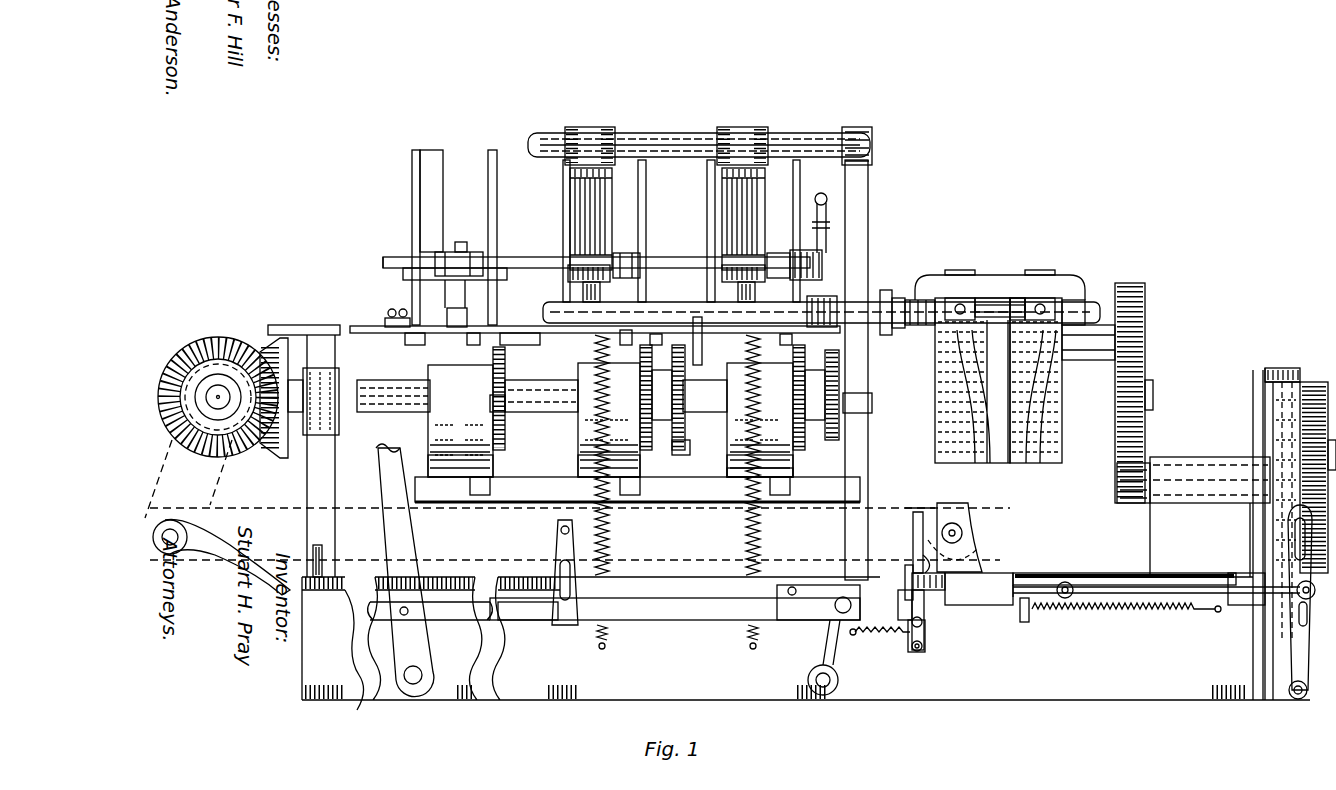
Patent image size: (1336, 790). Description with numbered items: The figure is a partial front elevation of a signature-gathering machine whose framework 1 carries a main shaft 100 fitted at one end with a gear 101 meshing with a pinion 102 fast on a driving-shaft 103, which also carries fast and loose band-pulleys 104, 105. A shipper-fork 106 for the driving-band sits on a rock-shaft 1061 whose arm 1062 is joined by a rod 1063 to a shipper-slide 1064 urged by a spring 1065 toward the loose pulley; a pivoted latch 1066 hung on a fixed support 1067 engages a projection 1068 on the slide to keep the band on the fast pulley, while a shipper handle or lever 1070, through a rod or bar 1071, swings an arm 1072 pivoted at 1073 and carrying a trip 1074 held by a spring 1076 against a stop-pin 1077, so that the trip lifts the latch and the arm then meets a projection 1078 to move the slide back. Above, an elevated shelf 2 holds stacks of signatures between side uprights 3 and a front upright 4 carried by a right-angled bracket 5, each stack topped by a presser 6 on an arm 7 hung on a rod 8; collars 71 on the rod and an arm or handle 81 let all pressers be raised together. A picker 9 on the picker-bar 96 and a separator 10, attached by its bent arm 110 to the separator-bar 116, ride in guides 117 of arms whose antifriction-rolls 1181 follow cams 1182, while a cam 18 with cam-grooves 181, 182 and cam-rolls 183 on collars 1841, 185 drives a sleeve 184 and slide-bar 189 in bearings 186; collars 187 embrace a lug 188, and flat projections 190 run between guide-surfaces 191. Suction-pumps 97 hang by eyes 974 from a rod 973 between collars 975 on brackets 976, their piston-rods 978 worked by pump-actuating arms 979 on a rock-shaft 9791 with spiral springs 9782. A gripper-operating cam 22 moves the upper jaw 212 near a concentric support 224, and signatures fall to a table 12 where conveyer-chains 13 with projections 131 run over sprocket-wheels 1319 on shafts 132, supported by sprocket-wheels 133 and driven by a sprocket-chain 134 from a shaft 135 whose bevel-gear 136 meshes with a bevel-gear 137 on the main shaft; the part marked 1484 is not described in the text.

The framework 1 is at (342, 471).
The elevated shelf 2 is at (291, 323).
The side uprights 3 is at (410, 168).
The front upright 4 is at (420, 148).
The right-angled bracket 5 is at (393, 257).
The presser 6 is at (390, 317).
The arm 7 is at (458, 252).
The rod 8 is at (455, 250).
The picker 9 is at (468, 340).
The separator 10 is at (515, 398).
The table-like support 12 is at (907, 505).
The conveyer-chains 13 is at (275, 508).
The cam 18 is at (1000, 300).
The gripper-operating cam 22 is at (491, 388).
The collar 71 is at (440, 250).
The arm or handle 81 is at (868, 172).
The picker-bar 96 is at (413, 340).
The suction-pumps 97 is at (563, 213).
The main shaft 100 is at (368, 380).
The gear 101 is at (1153, 298).
The pinion 102 is at (1132, 500).
The driving-shaft 103 is at (1155, 470).
The fast band-pulley 104 is at (1285, 366).
The loose band-pulley 105 is at (1312, 382).
The shipper-fork 106 is at (1268, 368).
The bent arm 110 is at (530, 334).
The separator-bar 116 is at (358, 324).
The guides 117 is at (698, 366).
The projections 131 is at (530, 482).
The shafts 132 is at (185, 543).
The sprocket-wheels 133 is at (558, 600).
The sprocket-chain 134 is at (212, 506).
The shaft 135 is at (213, 385).
The bevel-gear 136 is at (232, 335).
The bevel-gear 137 is at (265, 340).
The cam-groove 181 is at (968, 462).
The cam-groove 182 is at (1023, 463).
The cam-rolls 183 is at (985, 300).
The sleeve 184 is at (960, 298).
The collar 185 is at (1050, 298).
The bearings 186 is at (920, 298).
The collars 187 is at (884, 300).
The lug 188 is at (898, 298).
The slide-bar 189 is at (1072, 300).
The flat projections 190 is at (960, 275).
The guide-surfaces 191 is at (1035, 298).
The upper jaw 212 is at (480, 497).
The concentric support 224 is at (589, 443).
The rod 973 is at (532, 148).
The eyes or bearings 974 is at (590, 128).
The collars 975 is at (572, 127).
The brackets 976 is at (870, 160).
The piston-rods 978 is at (578, 268).
The pump-actuating arms 979 is at (818, 197).
The rock-shaft 1061 is at (1296, 700).
The arm 1062 is at (1287, 661).
The rod 1063 is at (1165, 600).
The shipper-slide 1064 is at (1025, 625).
The spring 1065 is at (1100, 615).
The pivoted latch 1066 is at (907, 600).
The fixed support 1067 is at (955, 585).
The projection 1068 is at (912, 625).
The shipper handle or lever 1070 is at (400, 448).
The rod or bar 1071 is at (512, 625).
The arm 1072 is at (822, 660).
The pivot 1073 is at (815, 690).
The trip 1074 is at (926, 612).
The spring 1076 is at (882, 640).
The stop-pin 1077 is at (920, 652).
The projection 1078 is at (800, 598).
The antifriction-rolls 1181 is at (680, 452).
The cams 1182 is at (735, 478).
The sprocket-wheels 1319 is at (175, 508).
The bracket 1484 is at (975, 505).
The collar 1841 is at (1008, 298).
The spiral springs 9782 is at (604, 620).
The rock-shaft 9791 is at (455, 320).